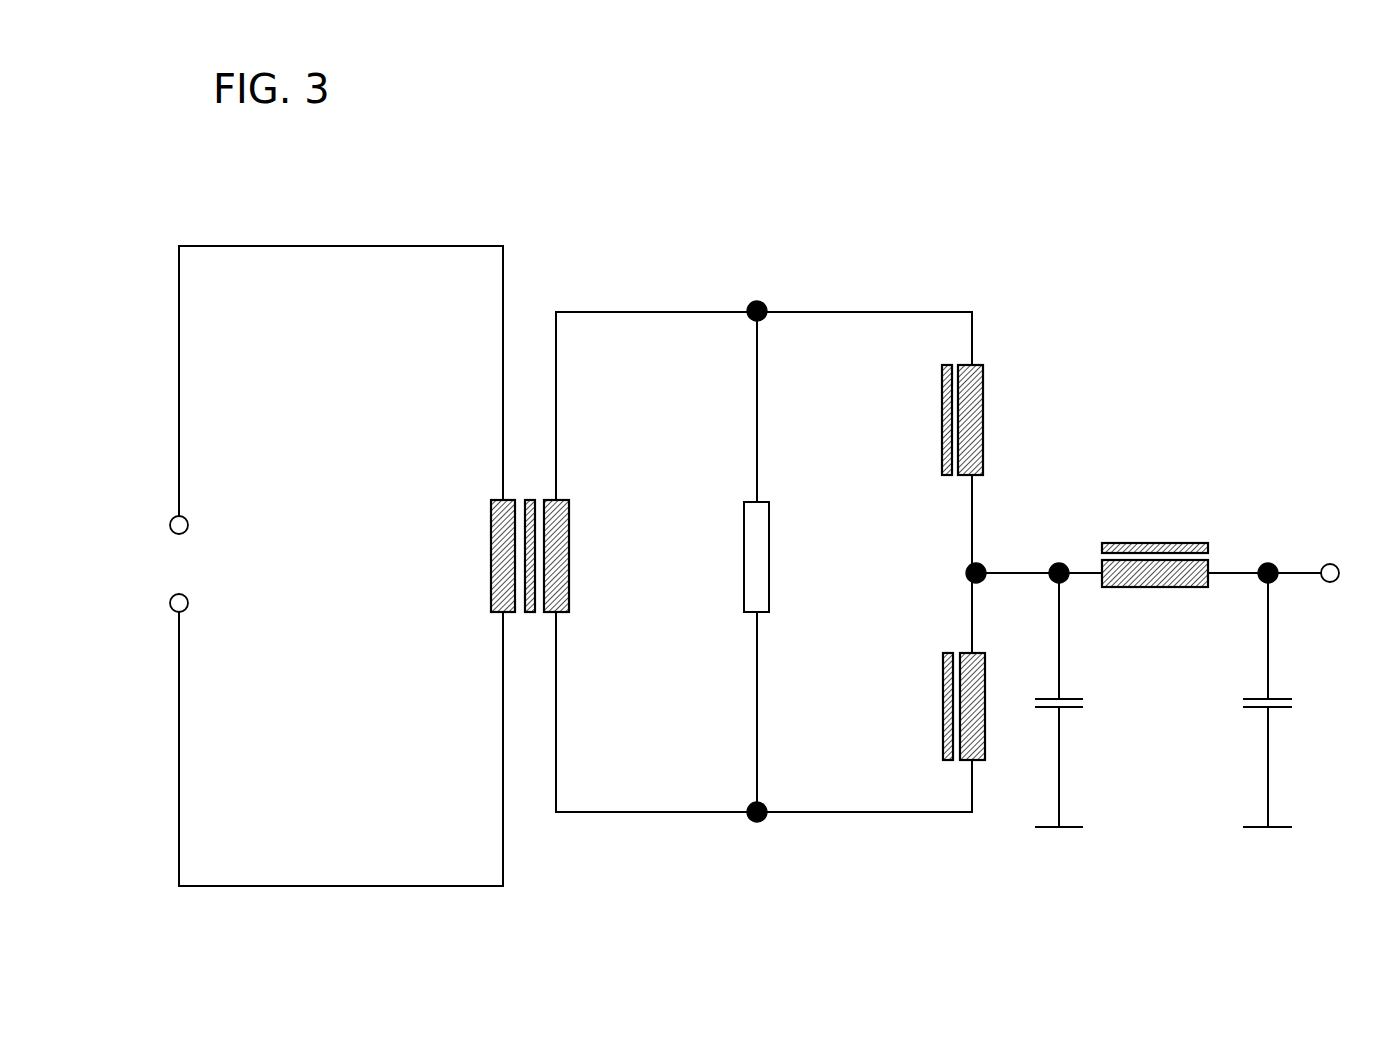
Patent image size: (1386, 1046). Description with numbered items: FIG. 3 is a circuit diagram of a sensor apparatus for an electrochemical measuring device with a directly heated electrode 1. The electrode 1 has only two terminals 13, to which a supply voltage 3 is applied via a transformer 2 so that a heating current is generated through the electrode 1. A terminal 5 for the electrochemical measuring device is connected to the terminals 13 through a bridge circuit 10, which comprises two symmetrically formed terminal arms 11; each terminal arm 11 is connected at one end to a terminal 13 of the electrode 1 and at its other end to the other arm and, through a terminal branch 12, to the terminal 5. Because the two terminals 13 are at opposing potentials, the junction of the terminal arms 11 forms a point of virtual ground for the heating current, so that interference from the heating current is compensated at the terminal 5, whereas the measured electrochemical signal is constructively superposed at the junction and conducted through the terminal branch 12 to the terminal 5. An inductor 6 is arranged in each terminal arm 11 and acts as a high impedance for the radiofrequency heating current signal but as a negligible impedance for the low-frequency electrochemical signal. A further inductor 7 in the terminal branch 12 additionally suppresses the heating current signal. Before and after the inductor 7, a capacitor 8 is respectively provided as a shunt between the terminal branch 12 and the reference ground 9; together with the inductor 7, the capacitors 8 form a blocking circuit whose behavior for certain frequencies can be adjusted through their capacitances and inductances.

The electrode 1 is at (760, 562).
The transformer 2 is at (570, 557).
The supply voltage 3 is at (175, 567).
The terminal 5 is at (1333, 563).
The inductor 6 is at (973, 418).
The inductor 7 is at (1167, 542).
The capacitor 8 is at (1080, 708).
The reference ground 9 is at (1073, 828).
The bridge circuit 10 is at (993, 287).
The terminal arm 11 is at (873, 310).
The terminal branch 12 is at (1082, 570).
The terminal 13 is at (760, 298).